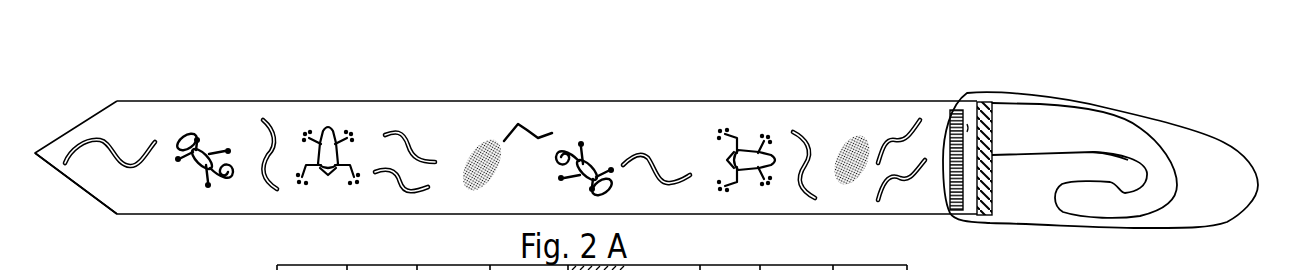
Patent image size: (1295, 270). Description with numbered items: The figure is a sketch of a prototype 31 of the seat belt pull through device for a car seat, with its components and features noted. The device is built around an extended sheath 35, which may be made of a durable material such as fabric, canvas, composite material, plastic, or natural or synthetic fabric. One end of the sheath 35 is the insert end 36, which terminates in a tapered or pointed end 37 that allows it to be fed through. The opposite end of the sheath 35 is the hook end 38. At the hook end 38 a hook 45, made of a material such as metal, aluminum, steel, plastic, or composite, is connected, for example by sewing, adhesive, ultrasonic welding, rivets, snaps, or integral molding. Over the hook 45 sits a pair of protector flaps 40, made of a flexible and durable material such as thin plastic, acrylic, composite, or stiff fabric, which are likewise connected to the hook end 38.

The prototype 31 is at (245, 88).
The extended sheath 35 is at (506, 139).
The insert end 36 is at (76, 203).
The tapered or pointed end 37 is at (97, 115).
The hook end 38 is at (958, 92).
The protector flaps 40 is at (1175, 160).
The hook 45 is at (1100, 147).